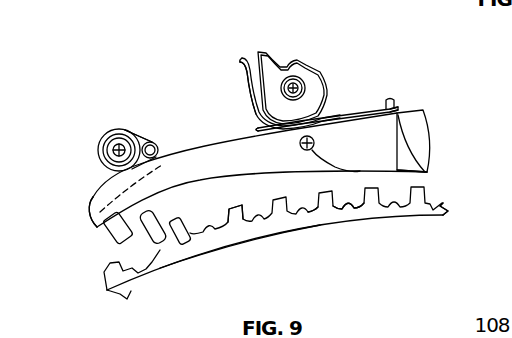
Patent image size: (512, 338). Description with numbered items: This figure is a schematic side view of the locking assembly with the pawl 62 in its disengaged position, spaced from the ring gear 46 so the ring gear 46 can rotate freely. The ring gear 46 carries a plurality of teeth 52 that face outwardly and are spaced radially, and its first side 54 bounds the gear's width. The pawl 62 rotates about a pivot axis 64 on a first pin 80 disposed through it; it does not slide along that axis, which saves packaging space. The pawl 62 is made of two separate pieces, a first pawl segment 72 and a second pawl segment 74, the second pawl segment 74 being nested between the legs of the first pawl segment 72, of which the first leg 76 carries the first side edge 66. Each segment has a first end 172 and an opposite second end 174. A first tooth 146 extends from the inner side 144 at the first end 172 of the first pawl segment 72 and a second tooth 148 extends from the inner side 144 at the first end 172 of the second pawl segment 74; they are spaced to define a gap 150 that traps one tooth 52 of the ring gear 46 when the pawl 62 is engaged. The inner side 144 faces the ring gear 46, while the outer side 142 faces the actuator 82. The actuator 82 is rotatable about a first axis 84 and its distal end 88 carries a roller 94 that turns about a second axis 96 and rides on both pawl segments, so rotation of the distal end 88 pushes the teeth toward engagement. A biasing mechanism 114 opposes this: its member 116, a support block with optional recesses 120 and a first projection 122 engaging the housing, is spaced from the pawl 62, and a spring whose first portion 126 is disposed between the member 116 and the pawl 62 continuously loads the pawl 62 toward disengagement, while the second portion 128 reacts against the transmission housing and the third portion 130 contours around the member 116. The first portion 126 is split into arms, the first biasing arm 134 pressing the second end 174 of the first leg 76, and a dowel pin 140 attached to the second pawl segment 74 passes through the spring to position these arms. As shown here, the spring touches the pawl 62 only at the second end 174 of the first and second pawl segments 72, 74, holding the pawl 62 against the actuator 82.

The ring gear 46 is at (282, 241).
The teeth 52 is at (240, 209).
The first side 54 is at (355, 218).
The pawl 62 is at (443, 130).
The pivot axis 64 is at (297, 148).
The first side edge 66 is at (428, 171).
The first pawl segment 72 is at (177, 157).
The second pawl segment 74 is at (222, 240).
The first leg 76 is at (213, 153).
The first pin 80 is at (345, 170).
The actuator 82 is at (105, 116).
The first axis 84 is at (100, 135).
The distal end 88 is at (113, 129).
The roller 94 is at (153, 140).
The second axis 96 is at (113, 203).
The biasing mechanism 114 is at (368, 103).
The member 116 is at (260, 53).
The recesses 120 is at (289, 66).
The first projection 122 is at (305, 63).
The first portion 126 is at (426, 173).
The second portion 128 is at (235, 60).
The third portion 130 is at (258, 130).
The first biasing arm 134 is at (405, 106).
The dowel pin 140 is at (394, 106).
The outer side 142 is at (221, 134).
The inner side 144 is at (310, 181).
The first tooth 146 is at (107, 229).
The second tooth 148 is at (190, 244).
The gap 150 is at (150, 238).
The first end 172 is at (86, 193).
The second end 174 is at (443, 144).